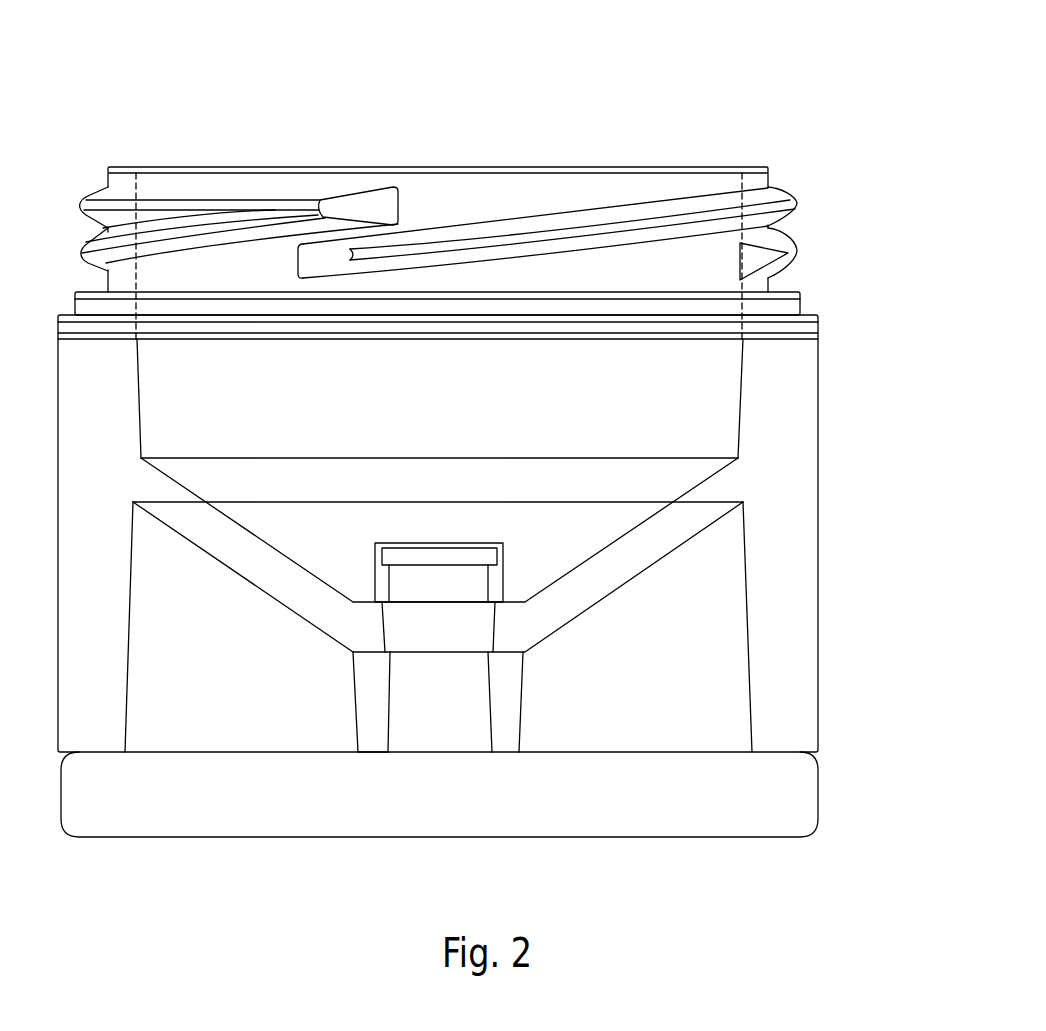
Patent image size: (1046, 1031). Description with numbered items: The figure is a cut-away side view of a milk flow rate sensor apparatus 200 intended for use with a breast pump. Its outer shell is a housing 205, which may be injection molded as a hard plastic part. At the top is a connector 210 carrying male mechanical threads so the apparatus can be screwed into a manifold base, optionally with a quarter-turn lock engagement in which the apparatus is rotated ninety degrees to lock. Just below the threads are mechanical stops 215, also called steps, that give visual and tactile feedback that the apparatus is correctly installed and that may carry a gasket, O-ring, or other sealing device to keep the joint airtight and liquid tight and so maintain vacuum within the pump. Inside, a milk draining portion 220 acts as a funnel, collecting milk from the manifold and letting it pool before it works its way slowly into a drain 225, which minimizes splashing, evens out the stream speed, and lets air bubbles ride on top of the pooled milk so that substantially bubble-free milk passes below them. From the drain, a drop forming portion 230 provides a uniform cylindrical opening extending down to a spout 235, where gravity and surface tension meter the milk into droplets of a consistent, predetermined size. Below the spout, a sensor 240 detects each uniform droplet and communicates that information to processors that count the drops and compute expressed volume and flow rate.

The milk flow rate sensor apparatus 200 is at (594, 38).
The housing 205 is at (818, 465).
The connector 210 is at (798, 206).
The mechanical stops 215 is at (803, 303).
The milk draining portion 220 is at (670, 458).
The drain 225 is at (373, 567).
The drop forming portion 230 is at (493, 677).
The spout 235 is at (388, 733).
The sensor 240 is at (808, 795).